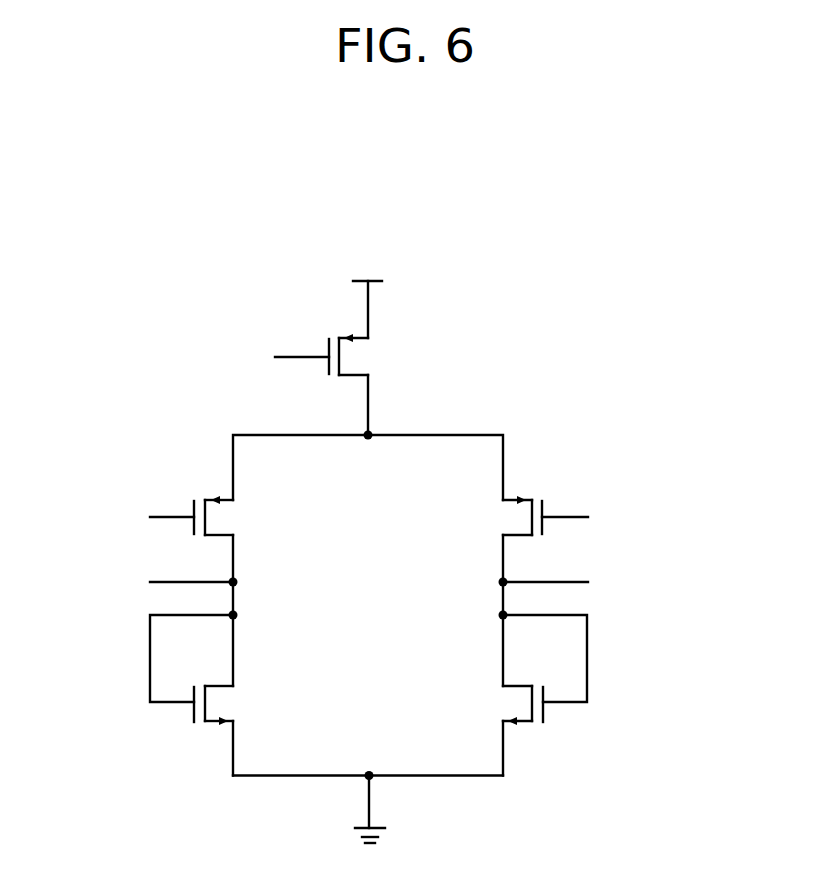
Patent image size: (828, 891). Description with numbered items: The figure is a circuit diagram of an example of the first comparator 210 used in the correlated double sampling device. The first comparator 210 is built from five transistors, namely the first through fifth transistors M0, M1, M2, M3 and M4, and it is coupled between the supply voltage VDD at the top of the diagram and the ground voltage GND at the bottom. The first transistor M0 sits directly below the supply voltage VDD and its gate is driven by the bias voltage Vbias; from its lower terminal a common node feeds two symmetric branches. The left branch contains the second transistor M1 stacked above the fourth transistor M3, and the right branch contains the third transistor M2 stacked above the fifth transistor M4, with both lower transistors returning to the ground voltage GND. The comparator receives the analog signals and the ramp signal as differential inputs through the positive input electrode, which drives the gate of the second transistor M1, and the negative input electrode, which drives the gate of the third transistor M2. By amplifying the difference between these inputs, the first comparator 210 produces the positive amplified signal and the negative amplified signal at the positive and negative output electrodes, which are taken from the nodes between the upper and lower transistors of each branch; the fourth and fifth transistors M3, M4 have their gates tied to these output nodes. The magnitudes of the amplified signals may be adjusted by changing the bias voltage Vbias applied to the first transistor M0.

The first comparator 210 is at (387, 202).
The first transistor M0 is at (358, 354).
The second transistor M1 is at (225, 515).
The third transistor M2 is at (510, 515).
The fourth transistor M3 is at (226, 705).
The fifth transistor M4 is at (511, 705).
The supply voltage VDD is at (369, 295).
The ground voltage GND is at (371, 827).
The bias voltage Vbias is at (265, 357).